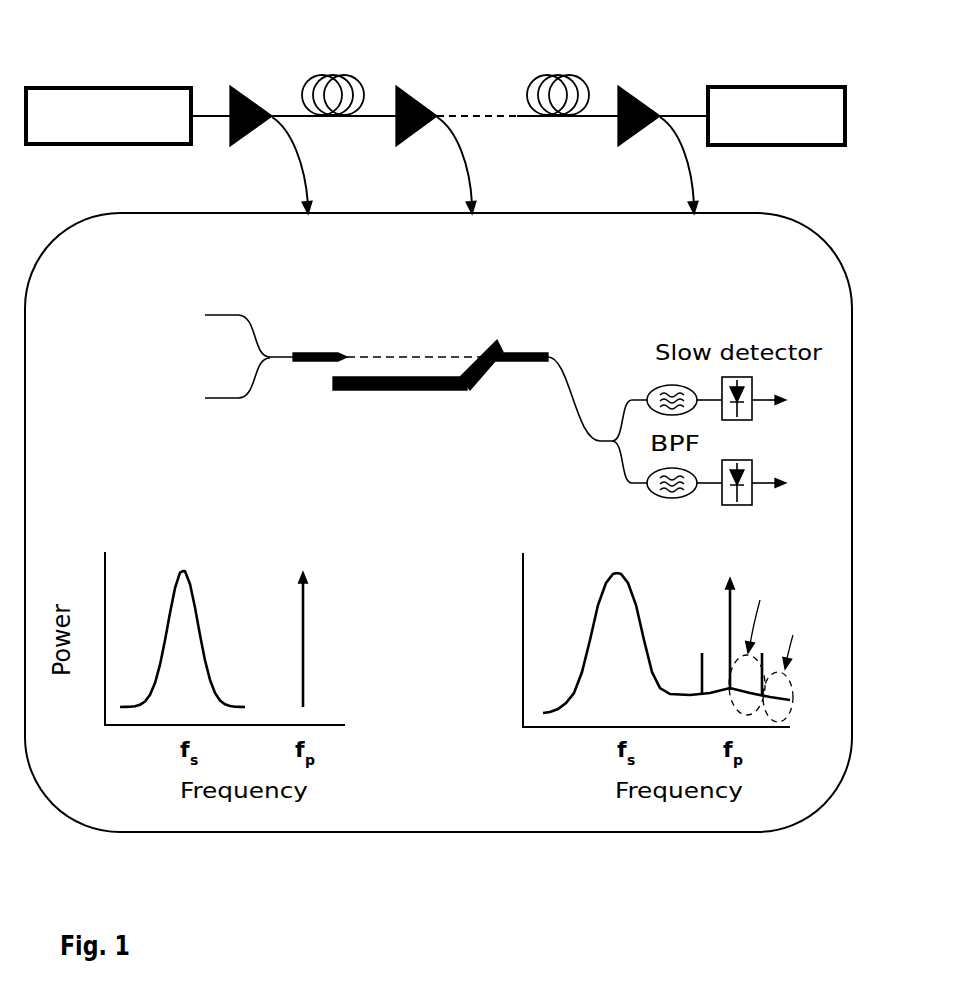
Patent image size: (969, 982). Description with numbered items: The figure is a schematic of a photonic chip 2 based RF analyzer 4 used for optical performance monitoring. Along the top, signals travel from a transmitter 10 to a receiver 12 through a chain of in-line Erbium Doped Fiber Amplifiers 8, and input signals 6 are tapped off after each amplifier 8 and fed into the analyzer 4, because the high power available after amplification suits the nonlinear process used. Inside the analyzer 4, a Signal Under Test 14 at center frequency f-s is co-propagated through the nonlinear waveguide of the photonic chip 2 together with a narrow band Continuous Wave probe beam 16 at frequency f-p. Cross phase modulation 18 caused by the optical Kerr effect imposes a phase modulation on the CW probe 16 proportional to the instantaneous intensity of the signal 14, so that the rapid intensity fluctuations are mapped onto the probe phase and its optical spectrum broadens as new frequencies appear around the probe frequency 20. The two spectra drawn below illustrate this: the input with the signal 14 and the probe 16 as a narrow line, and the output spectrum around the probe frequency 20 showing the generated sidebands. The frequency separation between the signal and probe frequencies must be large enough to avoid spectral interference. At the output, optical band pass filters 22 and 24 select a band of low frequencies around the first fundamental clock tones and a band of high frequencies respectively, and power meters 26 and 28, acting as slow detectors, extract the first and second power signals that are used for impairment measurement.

The photonic chip 2 is at (412, 392).
The RF analyzer 4 is at (797, 820).
The input signals 6 is at (304, 156).
The Erbium Doped Fiber Amplifier 8 is at (230, 128).
The transmitter 10 is at (100, 97).
The receiver 12 is at (777, 97).
The signal under test 14 is at (165, 295).
The continuous wave probe 16 is at (232, 400).
The cross phase modulation 18 is at (406, 605).
The probe frequency 20 is at (663, 628).
The optical band pass filter 22 is at (652, 390).
The optical band pass filter 24 is at (674, 498).
The power meter 26 is at (750, 420).
The power meter 28 is at (750, 505).